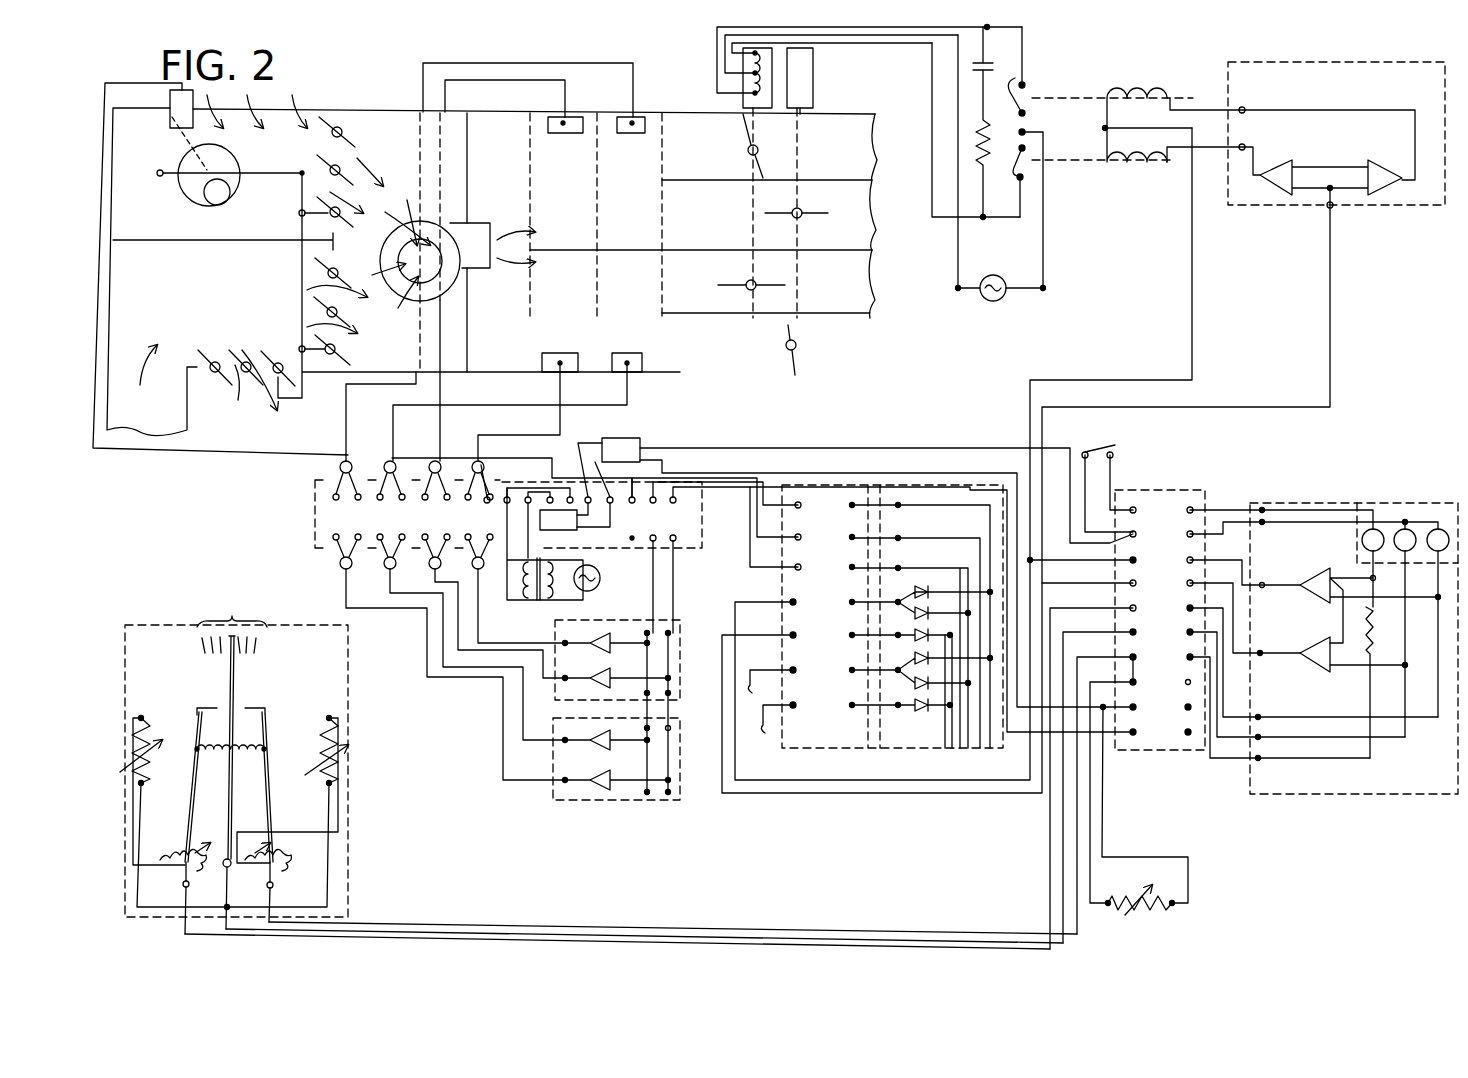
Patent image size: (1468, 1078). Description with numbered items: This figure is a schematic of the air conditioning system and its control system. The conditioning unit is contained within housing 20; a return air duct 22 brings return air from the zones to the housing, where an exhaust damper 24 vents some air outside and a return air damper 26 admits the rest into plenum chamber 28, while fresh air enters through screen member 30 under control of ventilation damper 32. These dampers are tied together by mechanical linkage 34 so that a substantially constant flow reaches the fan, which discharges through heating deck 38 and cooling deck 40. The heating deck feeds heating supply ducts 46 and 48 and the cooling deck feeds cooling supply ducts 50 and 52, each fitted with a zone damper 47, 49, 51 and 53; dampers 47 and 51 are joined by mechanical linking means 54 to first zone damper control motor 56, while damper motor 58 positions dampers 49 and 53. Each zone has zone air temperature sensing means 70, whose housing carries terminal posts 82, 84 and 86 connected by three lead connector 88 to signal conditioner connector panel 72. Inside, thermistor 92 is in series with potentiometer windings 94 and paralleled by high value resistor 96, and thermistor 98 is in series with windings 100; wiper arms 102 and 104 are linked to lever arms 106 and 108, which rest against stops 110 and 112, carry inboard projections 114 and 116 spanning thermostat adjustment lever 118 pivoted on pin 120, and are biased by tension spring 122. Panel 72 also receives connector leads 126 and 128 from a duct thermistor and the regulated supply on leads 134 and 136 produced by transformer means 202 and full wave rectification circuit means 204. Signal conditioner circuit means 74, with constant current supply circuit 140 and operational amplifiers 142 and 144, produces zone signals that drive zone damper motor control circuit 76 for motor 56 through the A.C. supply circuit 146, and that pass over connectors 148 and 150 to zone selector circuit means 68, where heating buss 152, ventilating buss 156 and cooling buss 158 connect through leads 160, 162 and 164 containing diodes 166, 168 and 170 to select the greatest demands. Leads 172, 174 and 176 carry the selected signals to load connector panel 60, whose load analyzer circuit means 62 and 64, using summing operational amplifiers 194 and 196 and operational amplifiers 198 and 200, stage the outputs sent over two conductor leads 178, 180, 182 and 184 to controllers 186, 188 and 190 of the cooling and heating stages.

The housing 20 is at (340, 110).
The return air duct 22 is at (137, 415).
The exhaust damper 24 is at (240, 395).
The return air damper 26 is at (345, 348).
The plenum chamber 28 is at (453, 242).
The screen member 30 is at (265, 100).
The ventilation damper 32 is at (352, 142).
The mechanical linkage 34 is at (300, 272).
The heating deck 38 is at (194, 197).
The cooling deck 40 is at (163, 117).
The heating supply duct 46 is at (862, 133).
The zone damper 47 is at (803, 176).
The heating supply duct 48 is at (863, 192).
The zone damper 49 is at (820, 223).
The cooling supply duct 50 is at (872, 277).
The zone damper 51 is at (770, 290).
The cooling supply duct 52 is at (868, 333).
The zone damper 53 is at (800, 352).
The mechanical linking means 54 is at (758, 137).
The first zone damper control motor 56 is at (745, 95).
The damper motor 58 is at (813, 95).
The load connector panel 60 is at (315, 508).
The load analyzer circuit means 62 is at (617, 707).
The load analyzer circuit means 64 is at (616, 759).
The zone selector circuit means 68 is at (983, 455).
The zone air temperature sensing means 70 is at (132, 625).
The signal conditioner connector panel 72 is at (1163, 488).
The signal conditioner circuit means 74 is at (1243, 793).
The zone damper motor control circuit 76 is at (1445, 205).
The terminal post 82 is at (183, 884).
The common terminal 84 is at (225, 907).
The terminal post 86 is at (273, 885).
The three lead connector 88 is at (690, 912).
The thermistor 92 is at (140, 727).
The potentiometer windings 94 is at (165, 848).
The high value resistor 96 is at (128, 745).
The thermistor 98 is at (340, 755).
The potentiometer windings 100 is at (300, 850).
The wiper arm 102 is at (258, 850).
The wiper arm 104 is at (210, 850).
The lever arm 106 is at (268, 710).
The lever arm 108 is at (205, 708).
The stop 110 is at (265, 705).
The stop 112 is at (200, 710).
The inboard projection 114 is at (258, 700).
The inboard projection 116 is at (200, 717).
The thermostat adjustment lever 118 is at (236, 687).
The pin 120 is at (232, 633).
The tension spring 122 is at (258, 747).
The connector lead 126 is at (1092, 780).
The connector lead 128 is at (1104, 813).
The lead 134 is at (922, 470).
The lead 136 is at (963, 475).
The constant current supply circuit 140 is at (1425, 503).
The operational amplifier 142 is at (1022, 78).
The operational amplifier 144 is at (1030, 178).
The 120 volt A.C. supply circuit 146 is at (750, 74).
The connector 148 is at (750, 55).
The connector 150 is at (725, 648).
The heating buss 152 is at (930, 500).
The ventilating buss 156 is at (940, 538).
The cooling buss 158 is at (950, 567).
The lead 160 is at (980, 592).
The lead 162 is at (960, 617).
The lead 164 is at (940, 636).
The diode 166 is at (910, 588).
The diode 168 is at (912, 614).
The diode 170 is at (912, 640).
The lead 172 is at (795, 468).
The lead 174 is at (755, 470).
The lead 176 is at (757, 565).
The two conductor lead 178 is at (558, 424).
The two conductor lead 180 is at (440, 432).
The two conductor lead 182 is at (390, 455).
The two conductor lead 184 is at (340, 440).
The controller 186 is at (563, 372).
The controller 188 is at (575, 115).
The controller 190 is at (630, 372).
The summing operational amplifier 194 is at (603, 632).
The summing operational amplifier 196 is at (596, 672).
The operational amplifier 198 is at (508, 679).
The operational amplifier 200 is at (595, 792).
The transformer means 202 is at (533, 605).
The full wave rectification circuit means 204 is at (563, 530).